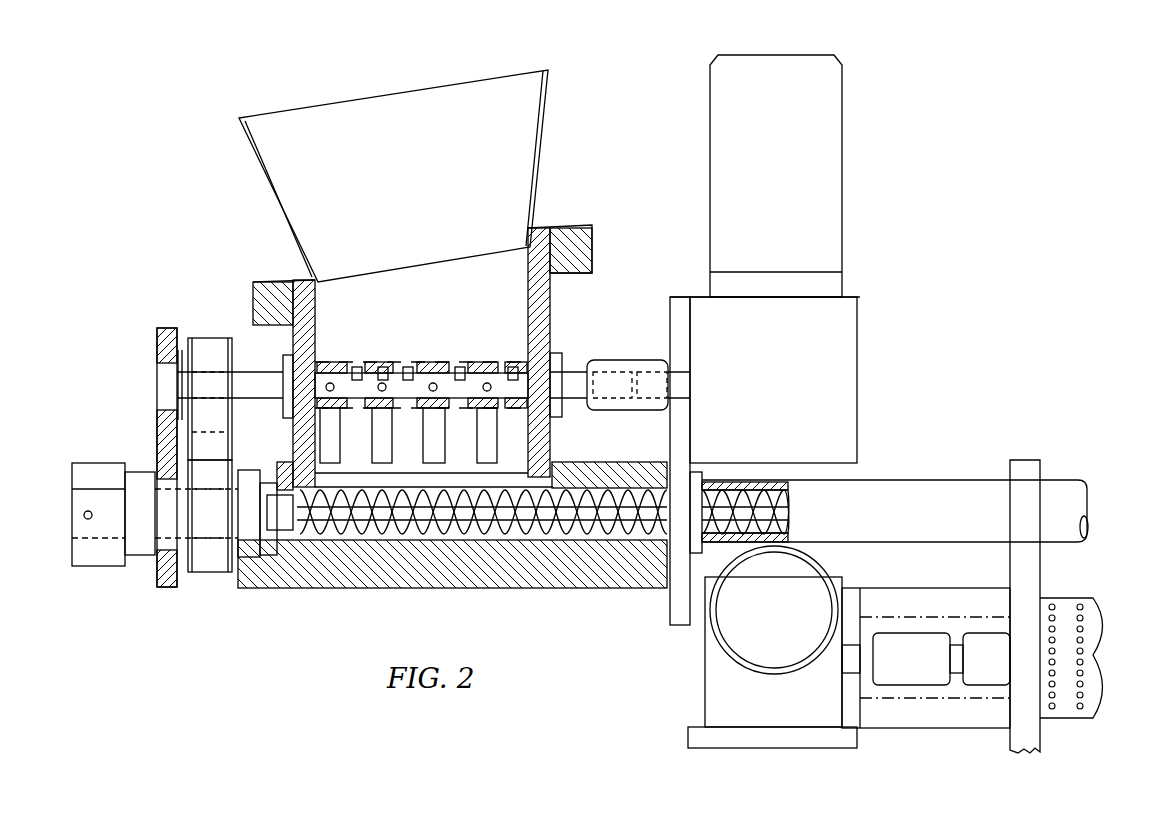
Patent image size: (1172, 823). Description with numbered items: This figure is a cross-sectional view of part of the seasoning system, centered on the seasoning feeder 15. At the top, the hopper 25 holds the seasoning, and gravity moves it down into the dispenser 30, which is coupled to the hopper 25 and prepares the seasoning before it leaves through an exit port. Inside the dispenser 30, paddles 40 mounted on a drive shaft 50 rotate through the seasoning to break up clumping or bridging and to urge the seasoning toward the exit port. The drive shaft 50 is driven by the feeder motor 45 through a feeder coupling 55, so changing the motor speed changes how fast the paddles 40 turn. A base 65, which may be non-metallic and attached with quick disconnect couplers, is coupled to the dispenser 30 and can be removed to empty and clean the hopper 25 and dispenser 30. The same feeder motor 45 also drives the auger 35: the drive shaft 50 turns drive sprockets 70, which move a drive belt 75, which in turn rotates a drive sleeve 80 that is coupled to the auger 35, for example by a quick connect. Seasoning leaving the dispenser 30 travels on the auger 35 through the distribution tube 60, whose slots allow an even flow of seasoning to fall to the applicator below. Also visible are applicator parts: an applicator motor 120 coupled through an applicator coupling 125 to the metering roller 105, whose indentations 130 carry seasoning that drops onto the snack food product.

The seasoning feeder 15 is at (152, 142).
The hopper 25 is at (268, 190).
The dispenser 30 is at (560, 318).
The auger 35 is at (624, 480).
The paddles 40 is at (445, 430).
The feeder motor 45 is at (846, 184).
The drive shaft 50 is at (568, 356).
The feeder coupling 55 is at (630, 358).
The distribution tube 60 is at (932, 478).
The base 65 is at (531, 589).
The drive sprockets 70 is at (236, 354).
The drive belt 75 is at (234, 446).
The drive sleeve 80 is at (229, 573).
The metering roller 105 is at (1100, 687).
The applicator motor 120 is at (770, 675).
The applicator coupling 125 is at (927, 687).
The indentations 130 is at (1083, 640).